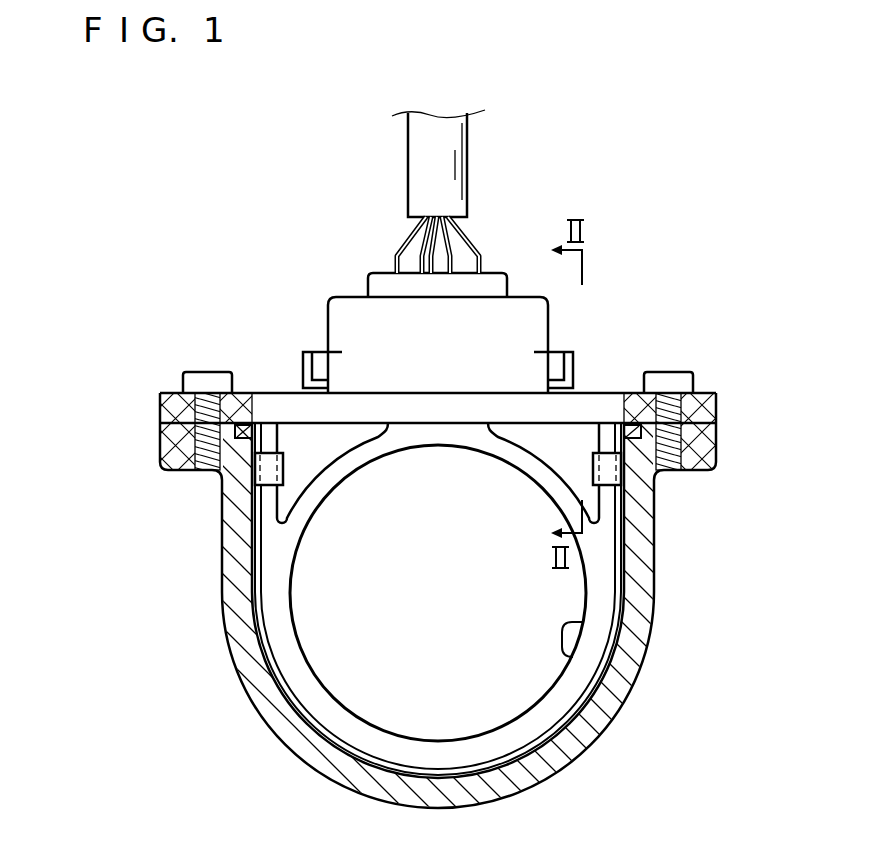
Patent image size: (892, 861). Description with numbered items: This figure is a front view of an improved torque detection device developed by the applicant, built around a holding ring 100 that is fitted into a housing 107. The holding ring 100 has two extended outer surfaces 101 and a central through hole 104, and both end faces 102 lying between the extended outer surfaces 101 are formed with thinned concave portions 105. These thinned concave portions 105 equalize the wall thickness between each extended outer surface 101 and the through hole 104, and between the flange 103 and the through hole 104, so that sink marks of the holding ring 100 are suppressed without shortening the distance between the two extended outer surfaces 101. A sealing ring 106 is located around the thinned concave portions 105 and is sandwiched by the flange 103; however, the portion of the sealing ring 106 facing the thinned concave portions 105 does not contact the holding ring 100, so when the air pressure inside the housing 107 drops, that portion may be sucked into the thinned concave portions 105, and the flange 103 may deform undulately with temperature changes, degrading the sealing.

The holding ring 100 is at (437, 459).
The extended outer surfaces 101 is at (257, 575).
The end faces 102 is at (589, 581).
The flange 103 is at (163, 407).
The through hole 104 is at (575, 657).
The thinned concave portions 105 is at (323, 461).
The sealing ring 106 is at (239, 425).
The housing 107 is at (645, 552).